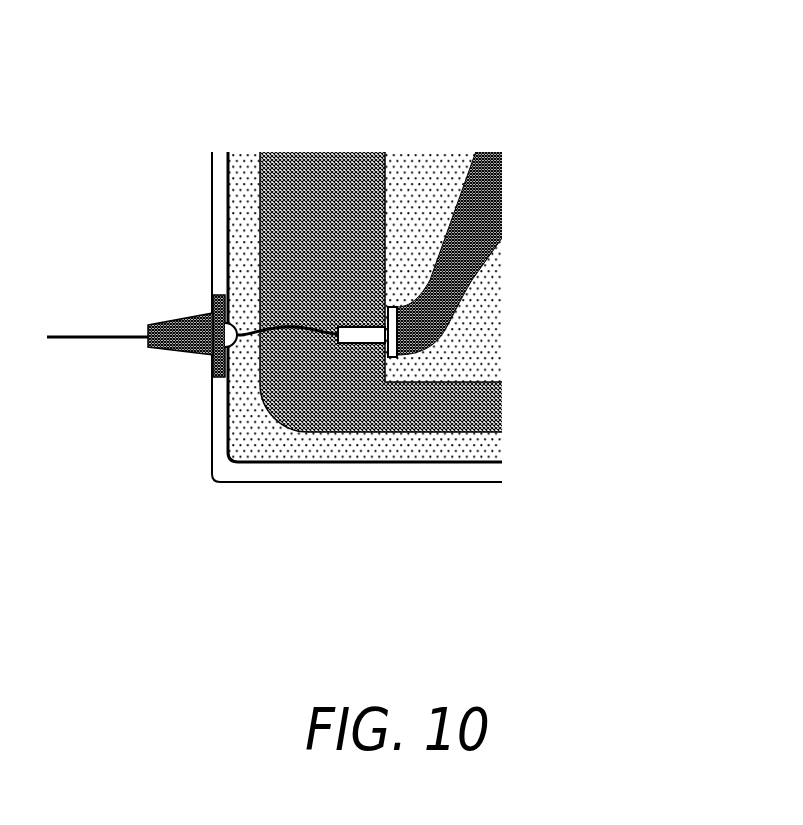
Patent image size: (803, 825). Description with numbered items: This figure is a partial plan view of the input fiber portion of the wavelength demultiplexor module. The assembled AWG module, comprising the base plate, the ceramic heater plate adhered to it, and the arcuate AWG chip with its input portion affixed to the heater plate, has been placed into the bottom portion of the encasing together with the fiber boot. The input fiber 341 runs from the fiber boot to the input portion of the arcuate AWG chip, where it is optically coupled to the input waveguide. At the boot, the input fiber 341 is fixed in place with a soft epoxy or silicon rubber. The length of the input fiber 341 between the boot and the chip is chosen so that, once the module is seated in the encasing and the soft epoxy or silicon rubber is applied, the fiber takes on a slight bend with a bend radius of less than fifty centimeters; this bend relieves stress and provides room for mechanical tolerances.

The input fiber 341 is at (90, 335).